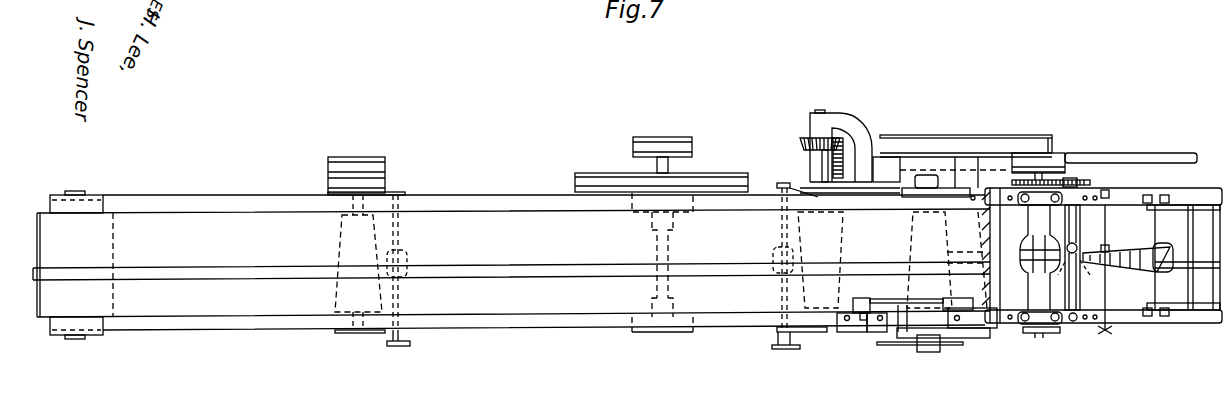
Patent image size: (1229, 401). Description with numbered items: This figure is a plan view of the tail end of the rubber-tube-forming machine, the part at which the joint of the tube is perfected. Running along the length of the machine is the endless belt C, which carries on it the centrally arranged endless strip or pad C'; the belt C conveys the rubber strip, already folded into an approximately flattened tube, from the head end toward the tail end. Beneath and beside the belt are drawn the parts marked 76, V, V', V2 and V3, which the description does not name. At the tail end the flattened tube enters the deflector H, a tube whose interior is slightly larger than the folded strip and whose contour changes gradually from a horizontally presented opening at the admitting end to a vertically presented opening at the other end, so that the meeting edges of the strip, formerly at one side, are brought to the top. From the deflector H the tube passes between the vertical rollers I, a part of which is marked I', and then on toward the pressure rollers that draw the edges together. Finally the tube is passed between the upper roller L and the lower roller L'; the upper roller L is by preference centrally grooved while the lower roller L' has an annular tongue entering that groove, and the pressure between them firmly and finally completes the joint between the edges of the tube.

The end plate of conveyor frame 76 is at (76, 265).
The endless belt C is at (513, 262).
The endless strip or pad C' is at (511, 251).
The pulley hanger V is at (334, 251).
The hanger bracket V' is at (832, 260).
The hanger bracket V2 is at (915, 237).
The hanger cross piece V3 is at (923, 262).
The lower roller L' is at (1031, 257).
The upper roller L is at (1038, 254).
The vertical rollers I is at (1093, 257).
The lever pivot I' is at (1079, 282).
The deflector H is at (1155, 255).